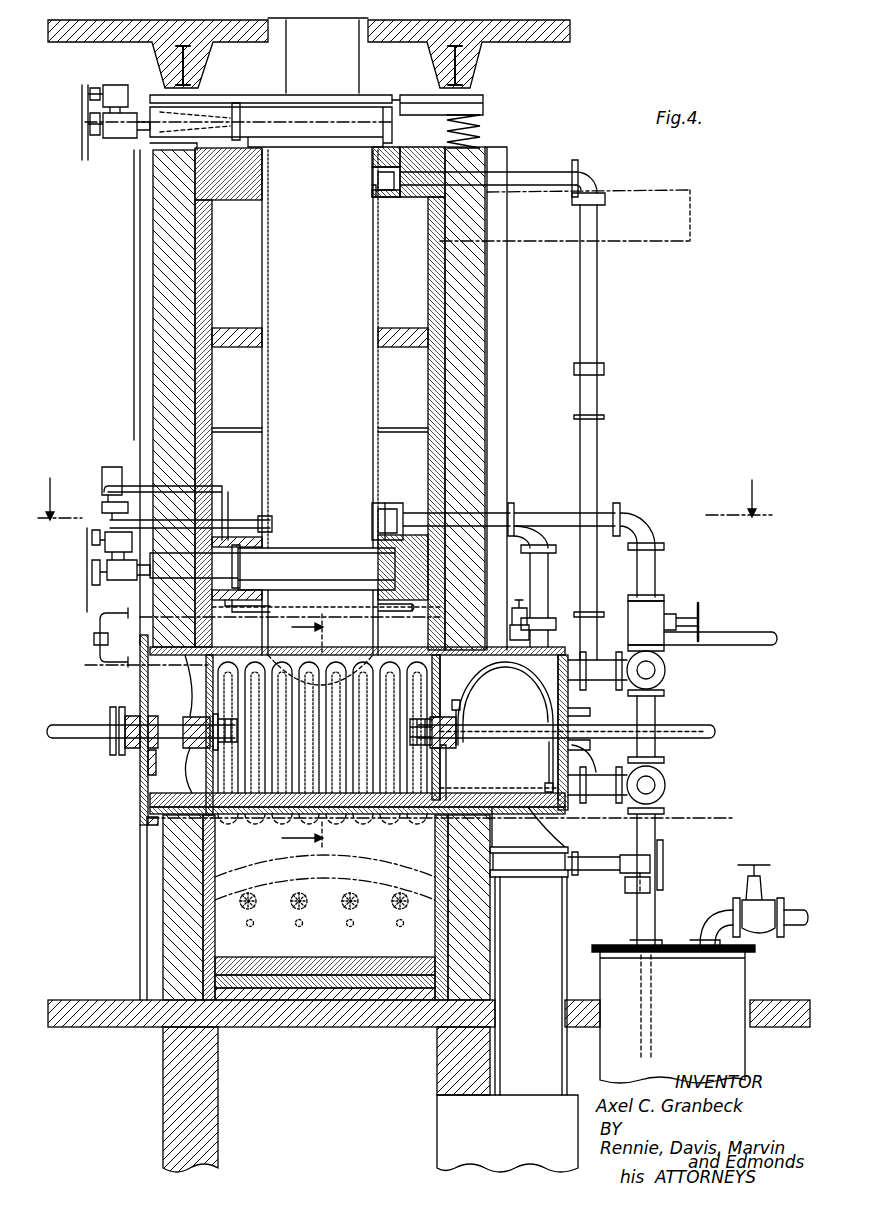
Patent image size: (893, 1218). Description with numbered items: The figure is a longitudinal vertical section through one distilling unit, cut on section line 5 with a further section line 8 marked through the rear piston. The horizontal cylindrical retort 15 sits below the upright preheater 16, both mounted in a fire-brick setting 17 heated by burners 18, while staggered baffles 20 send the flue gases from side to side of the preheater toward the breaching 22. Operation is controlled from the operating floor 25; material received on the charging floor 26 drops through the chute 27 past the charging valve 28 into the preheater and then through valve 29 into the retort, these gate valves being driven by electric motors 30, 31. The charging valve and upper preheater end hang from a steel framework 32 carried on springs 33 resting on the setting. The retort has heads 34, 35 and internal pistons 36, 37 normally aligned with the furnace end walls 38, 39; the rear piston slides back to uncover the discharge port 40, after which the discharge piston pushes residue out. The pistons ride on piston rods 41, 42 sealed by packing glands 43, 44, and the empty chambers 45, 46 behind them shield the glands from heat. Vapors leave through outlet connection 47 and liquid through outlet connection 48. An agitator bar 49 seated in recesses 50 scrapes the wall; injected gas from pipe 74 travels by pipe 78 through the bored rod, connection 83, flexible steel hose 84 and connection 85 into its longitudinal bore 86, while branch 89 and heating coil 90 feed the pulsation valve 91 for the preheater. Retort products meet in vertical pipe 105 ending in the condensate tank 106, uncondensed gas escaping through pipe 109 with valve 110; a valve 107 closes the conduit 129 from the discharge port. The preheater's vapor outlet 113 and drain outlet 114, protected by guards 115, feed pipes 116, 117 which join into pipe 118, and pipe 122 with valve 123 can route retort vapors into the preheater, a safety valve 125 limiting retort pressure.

The section line 5- 5 is at (405, 499).
The section line 8- 8 is at (302, 731).
The retort 15 is at (262, 816).
The preheater 16 is at (262, 266).
The setting 17 is at (194, 372).
The burners 18 is at (262, 926).
The staggered baffles 20 is at (238, 370).
The breaching 22 is at (653, 243).
The operating floor 25 is at (88, 1000).
The charging floor 26 is at (534, 40).
The chute 27 is at (288, 32).
The charging valve 28 is at (306, 138).
The valve 29 is at (290, 556).
The electric motor 30 is at (115, 85).
The electric motor 31 is at (107, 532).
The steel framework 32 is at (404, 100).
The springs 33 is at (483, 134).
The head 34 is at (140, 760).
The head 35 is at (597, 788).
The front or discharge piston 36 is at (190, 690).
The rear piston 37 is at (447, 757).
The end wall 38 is at (200, 822).
The end wall 39 is at (432, 840).
The discharge port 40 is at (566, 835).
The piston rod 41 is at (705, 725).
The piston rod 42 is at (76, 727).
The packing gland 43 is at (140, 706).
The packing gland 44 is at (580, 748).
The chamber 45 is at (165, 776).
The chamber 46 is at (578, 694).
The outlet connection 47 is at (656, 670).
The outlet connection 48 is at (656, 786).
The agitator bar 49 is at (500, 732).
The recesses 50 is at (205, 788).
The pipe 74 is at (94, 639).
The pipe 78 is at (713, 818).
The connection 83 is at (461, 706).
The flexible steel hose 84 is at (508, 665).
The connection 85 is at (546, 784).
The longitudinal bore 86 is at (486, 788).
The branch 89 is at (120, 620).
The heating coil 90 is at (395, 612).
The pulsation valve 91 is at (102, 482).
The vertical pipe 105 is at (655, 710).
The condensate tank 106 is at (603, 976).
The valve 107 is at (600, 872).
The pipe 109 is at (781, 907).
The valve 110 is at (758, 904).
The vapor outlet 113 is at (386, 198).
The drain outlet 114 is at (390, 505).
The guards 115 is at (372, 177).
The pipe 116 is at (597, 306).
The pipe 117 is at (547, 580).
The pipe 118 is at (715, 632).
The pipe 122 is at (636, 518).
The valve 123 is at (656, 606).
The safety valve 125 is at (530, 615).
The conduit 129 is at (556, 1052).